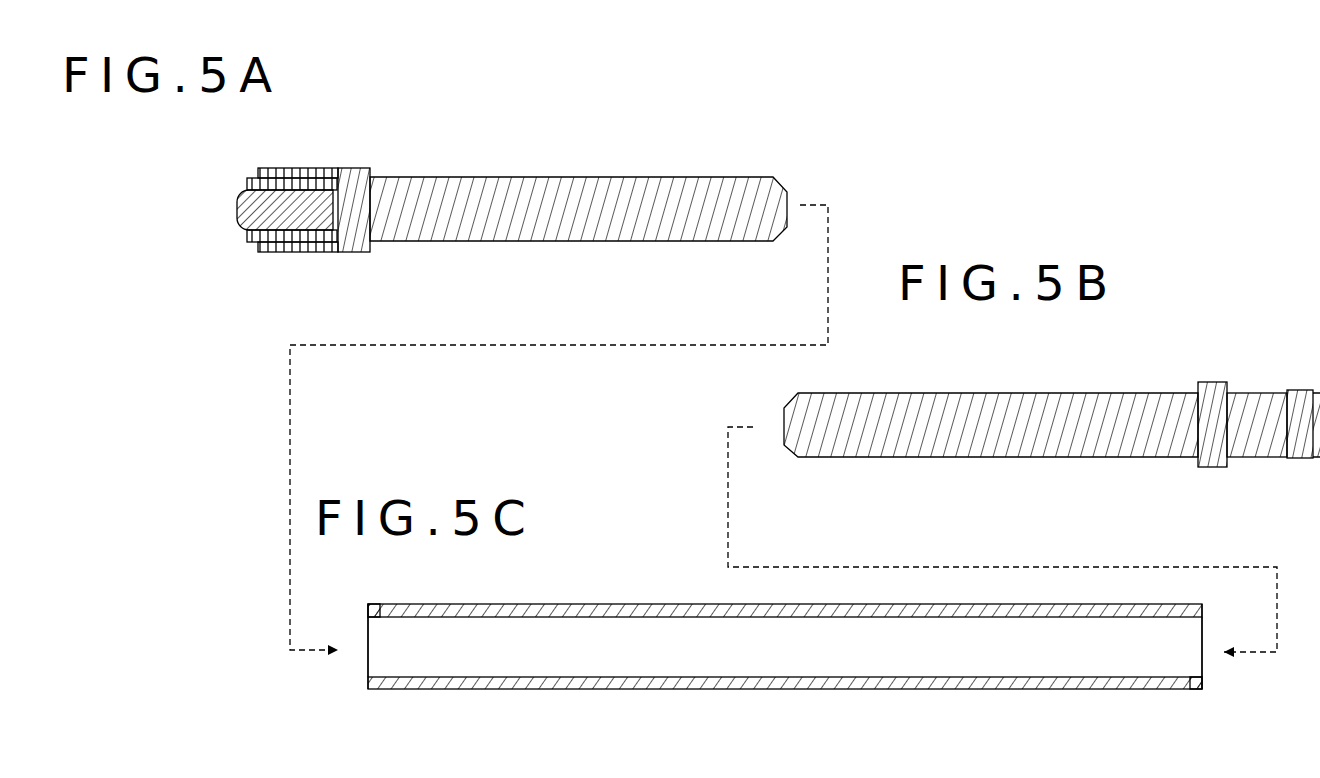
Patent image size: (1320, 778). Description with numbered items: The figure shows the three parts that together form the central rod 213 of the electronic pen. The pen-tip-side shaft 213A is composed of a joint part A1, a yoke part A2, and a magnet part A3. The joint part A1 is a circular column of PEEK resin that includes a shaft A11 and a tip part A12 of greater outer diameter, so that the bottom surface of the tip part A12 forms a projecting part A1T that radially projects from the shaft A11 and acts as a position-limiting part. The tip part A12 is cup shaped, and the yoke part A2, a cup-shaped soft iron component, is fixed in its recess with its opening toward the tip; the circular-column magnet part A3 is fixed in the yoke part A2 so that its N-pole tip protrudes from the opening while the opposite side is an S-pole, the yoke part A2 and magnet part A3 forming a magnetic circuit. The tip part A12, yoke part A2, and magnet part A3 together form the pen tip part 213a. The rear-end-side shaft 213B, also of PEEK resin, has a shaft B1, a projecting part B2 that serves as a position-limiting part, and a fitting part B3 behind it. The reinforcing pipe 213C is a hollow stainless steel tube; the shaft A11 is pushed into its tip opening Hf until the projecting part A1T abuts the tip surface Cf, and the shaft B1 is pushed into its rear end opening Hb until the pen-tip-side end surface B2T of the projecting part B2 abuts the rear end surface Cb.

In FIG. 5A, the central rod 213 is at (858, 94).
In FIG. 5A, the pen-tip-side shaft 213A is at (543, 164).
In FIG. 5A, the joint part A1 is at (500, 241).
In FIG. 5A, the shaft A11 is at (627, 234).
In FIG. 5A, the projecting part A1T is at (372, 172).
In FIG. 5A, the pen tip part 213a is at (238, 251).
In FIG. 5A, the tip part A12 is at (303, 168).
In FIG. 5A, the yoke part A2 is at (312, 238).
In FIG. 5A, the magnet part A3 is at (238, 206).
In FIG. 5B, the rear-end-side shaft 213B is at (1012, 384).
In FIG. 5B, the shaft B1 is at (1020, 458).
In FIG. 5B, the projecting part B2 is at (1222, 383).
In FIG. 5B, the pen-tip-side end surface B2T is at (1197, 384).
In FIG. 5B, the fitting part B3 is at (1252, 458).
In FIG. 5C, the reinforcing pipe 213C is at (576, 600).
In FIG. 5C, the tip surface Cf is at (368, 612).
In FIG. 5C, the tip opening Hf is at (363, 667).
In FIG. 5C, the rear end opening Hb is at (1207, 627).
In FIG. 5C, the rear end surface Cb is at (1203, 684).